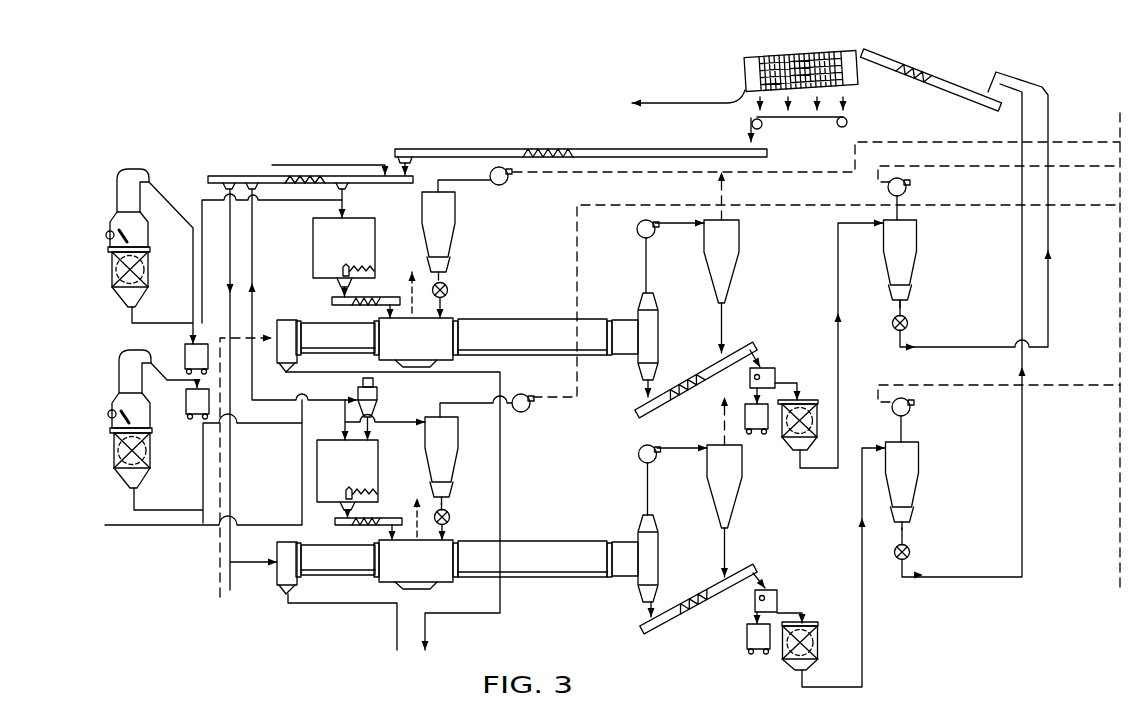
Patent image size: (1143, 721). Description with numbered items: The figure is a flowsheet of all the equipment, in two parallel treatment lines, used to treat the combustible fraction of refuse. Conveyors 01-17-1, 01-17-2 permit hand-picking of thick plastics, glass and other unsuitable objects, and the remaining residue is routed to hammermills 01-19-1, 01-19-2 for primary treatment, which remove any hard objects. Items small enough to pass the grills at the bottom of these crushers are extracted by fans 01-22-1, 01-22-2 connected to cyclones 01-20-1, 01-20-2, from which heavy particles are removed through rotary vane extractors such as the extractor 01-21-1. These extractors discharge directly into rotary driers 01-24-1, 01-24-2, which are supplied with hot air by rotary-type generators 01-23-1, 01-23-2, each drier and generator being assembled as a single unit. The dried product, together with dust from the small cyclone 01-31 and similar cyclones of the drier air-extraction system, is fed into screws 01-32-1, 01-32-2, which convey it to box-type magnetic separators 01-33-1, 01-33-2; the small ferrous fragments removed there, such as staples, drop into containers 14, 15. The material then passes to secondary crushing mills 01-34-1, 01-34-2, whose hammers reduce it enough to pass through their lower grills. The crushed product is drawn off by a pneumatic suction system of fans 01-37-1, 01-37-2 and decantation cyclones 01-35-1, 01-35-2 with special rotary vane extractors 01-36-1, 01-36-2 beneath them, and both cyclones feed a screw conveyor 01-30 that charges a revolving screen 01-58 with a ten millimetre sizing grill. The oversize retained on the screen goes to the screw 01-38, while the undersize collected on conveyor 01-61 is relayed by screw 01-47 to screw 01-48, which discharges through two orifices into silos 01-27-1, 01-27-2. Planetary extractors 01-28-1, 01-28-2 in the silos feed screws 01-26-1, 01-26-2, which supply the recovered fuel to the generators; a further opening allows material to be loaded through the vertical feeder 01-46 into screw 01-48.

The conveyor 01-17-1 is at (106, 233).
The hammermill 01-19-1 is at (145, 238).
The conveyor 01-17-2 is at (108, 413).
The hammermill 01-19-2 is at (148, 419).
The screw 01-48 is at (278, 170).
The vertical feeder 01-46 is at (310, 162).
The screw 01-47 is at (581, 143).
The silo 01-27-1 is at (316, 249).
The planetary extractor 01-28-1 is at (313, 223).
The screw 01-26-1 is at (392, 290).
The rotary-type generator 01-23-1 is at (318, 320).
The rotary drier 01-24-1 is at (518, 336).
The cyclone 01-20-1 is at (455, 212).
The rotary vane extractor 01-21-1 is at (448, 291).
The fan 01-22-1 is at (526, 185).
The screw 01-38 is at (655, 103).
The revolving screen 01-58 is at (807, 52).
The conveyor 01-61 is at (799, 132).
The screw conveyor 01-30 is at (930, 75).
The fan 01-37-1 is at (927, 195).
The decantation cyclone 01-35-1 is at (933, 268).
The rotary vane extractor 01-36-1 is at (930, 324).
The fan 01-37-2 is at (933, 419).
The decantation cyclone 01-35-2 is at (938, 493).
The rotary vane extractor 01-36-2 is at (935, 555).
The screw 01-32-1 is at (703, 377).
The box-type magnetic separator 01-33-1 is at (767, 368).
The secondary crushing mill 01-34-1 is at (830, 390).
The container 14 is at (759, 439).
The screw 01-32-2 is at (682, 603).
The box-type magnetic separator 01-33-2 is at (777, 600).
The secondary crushing mill 01-34-2 is at (827, 646).
The container 15 is at (745, 632).
The small cyclone 01-31 is at (389, 409).
The silo 01-27-2 is at (307, 473).
The planetary extractor 01-28-2 is at (347, 478).
The screw 01-26-2 is at (381, 497).
The fan 01-22-2 is at (547, 412).
The cyclone 01-20-2 is at (456, 448).
The rotary drier 01-24-2 is at (518, 547).
The rotary-type generator 01-23-2 is at (328, 572).